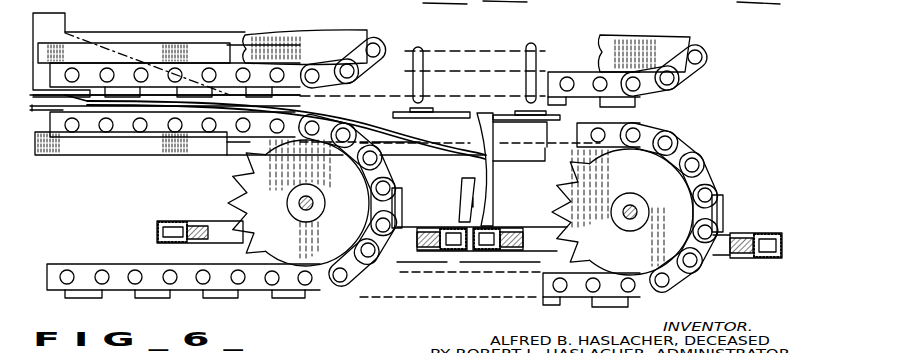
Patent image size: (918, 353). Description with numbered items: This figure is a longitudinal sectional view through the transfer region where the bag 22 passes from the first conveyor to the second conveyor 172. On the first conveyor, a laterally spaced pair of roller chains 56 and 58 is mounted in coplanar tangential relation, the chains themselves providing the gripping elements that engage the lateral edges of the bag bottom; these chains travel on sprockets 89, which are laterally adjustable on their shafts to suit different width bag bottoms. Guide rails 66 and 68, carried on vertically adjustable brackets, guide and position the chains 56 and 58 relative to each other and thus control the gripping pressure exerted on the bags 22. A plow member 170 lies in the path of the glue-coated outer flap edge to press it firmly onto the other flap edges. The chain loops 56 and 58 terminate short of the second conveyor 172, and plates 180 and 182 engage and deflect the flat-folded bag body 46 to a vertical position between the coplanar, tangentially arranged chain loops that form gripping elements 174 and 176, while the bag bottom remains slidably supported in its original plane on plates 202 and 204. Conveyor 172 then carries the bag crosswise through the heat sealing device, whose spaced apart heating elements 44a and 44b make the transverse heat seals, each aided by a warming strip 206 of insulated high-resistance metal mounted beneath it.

The bag 22 is at (155, 106).
The heating element 44a is at (425, 64).
The heating element 44b is at (526, 64).
The bag body 46 is at (430, 138).
The roller chain 56 is at (378, 28).
The roller chain 58 is at (85, 133).
The guide rail 66 is at (180, 48).
The guide rail 68 is at (153, 150).
The sprocket 89 is at (260, 15).
The plow member 170 is at (122, 12).
The second conveyor 172 is at (451, 265).
The gripping element 174 is at (177, 219).
The gripping element 176 is at (476, 252).
The plate 180 is at (494, 197).
The plate 182 is at (458, 208).
The supporting plate 202 is at (448, 112).
The supporting plate 204 is at (517, 125).
The warming strip 206 is at (410, 109).